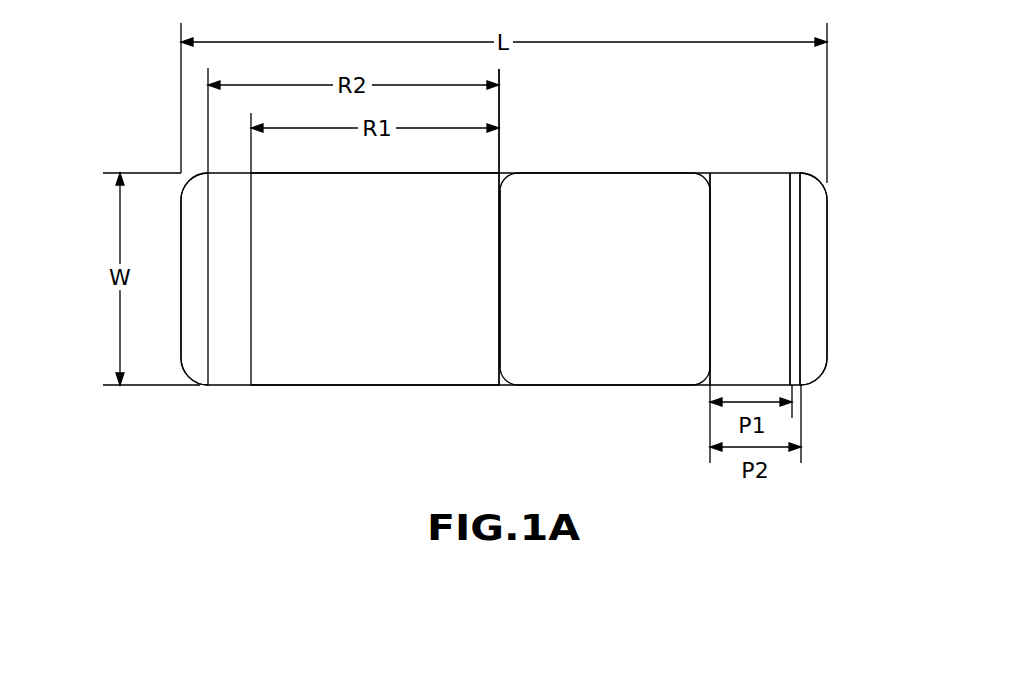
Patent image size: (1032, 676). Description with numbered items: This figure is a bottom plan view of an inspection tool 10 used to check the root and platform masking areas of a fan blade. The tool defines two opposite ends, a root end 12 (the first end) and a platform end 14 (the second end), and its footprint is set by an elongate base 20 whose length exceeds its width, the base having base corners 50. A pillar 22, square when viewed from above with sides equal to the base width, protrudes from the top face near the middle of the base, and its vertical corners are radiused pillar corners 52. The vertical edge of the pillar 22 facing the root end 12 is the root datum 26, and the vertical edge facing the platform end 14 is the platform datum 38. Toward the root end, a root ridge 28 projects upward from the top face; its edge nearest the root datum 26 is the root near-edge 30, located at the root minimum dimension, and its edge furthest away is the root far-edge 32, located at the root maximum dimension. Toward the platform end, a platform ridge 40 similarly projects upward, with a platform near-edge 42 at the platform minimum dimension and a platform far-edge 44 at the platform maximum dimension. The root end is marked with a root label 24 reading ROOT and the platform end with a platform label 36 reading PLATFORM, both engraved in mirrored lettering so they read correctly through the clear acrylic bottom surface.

The inspection tool 10 is at (852, 127).
The root end 12 is at (94, 256).
The platform end 14 is at (850, 250).
The base 20 is at (402, 349).
The pillar 22 is at (590, 207).
The root label 24 is at (310, 328).
The root datum 26 is at (499, 232).
The root ridge 28 is at (232, 196).
The root near-edge 30 is at (252, 198).
The root far-edge 32 is at (181, 265).
The platform label 36 is at (770, 244).
The platform datum 38 is at (727, 207).
The platform ridge 40 is at (795, 325).
The platform near-edge 42 is at (778, 205).
The platform far-edge 44 is at (800, 255).
The base corner 50 is at (818, 378).
The pillar corner 52 is at (495, 372).